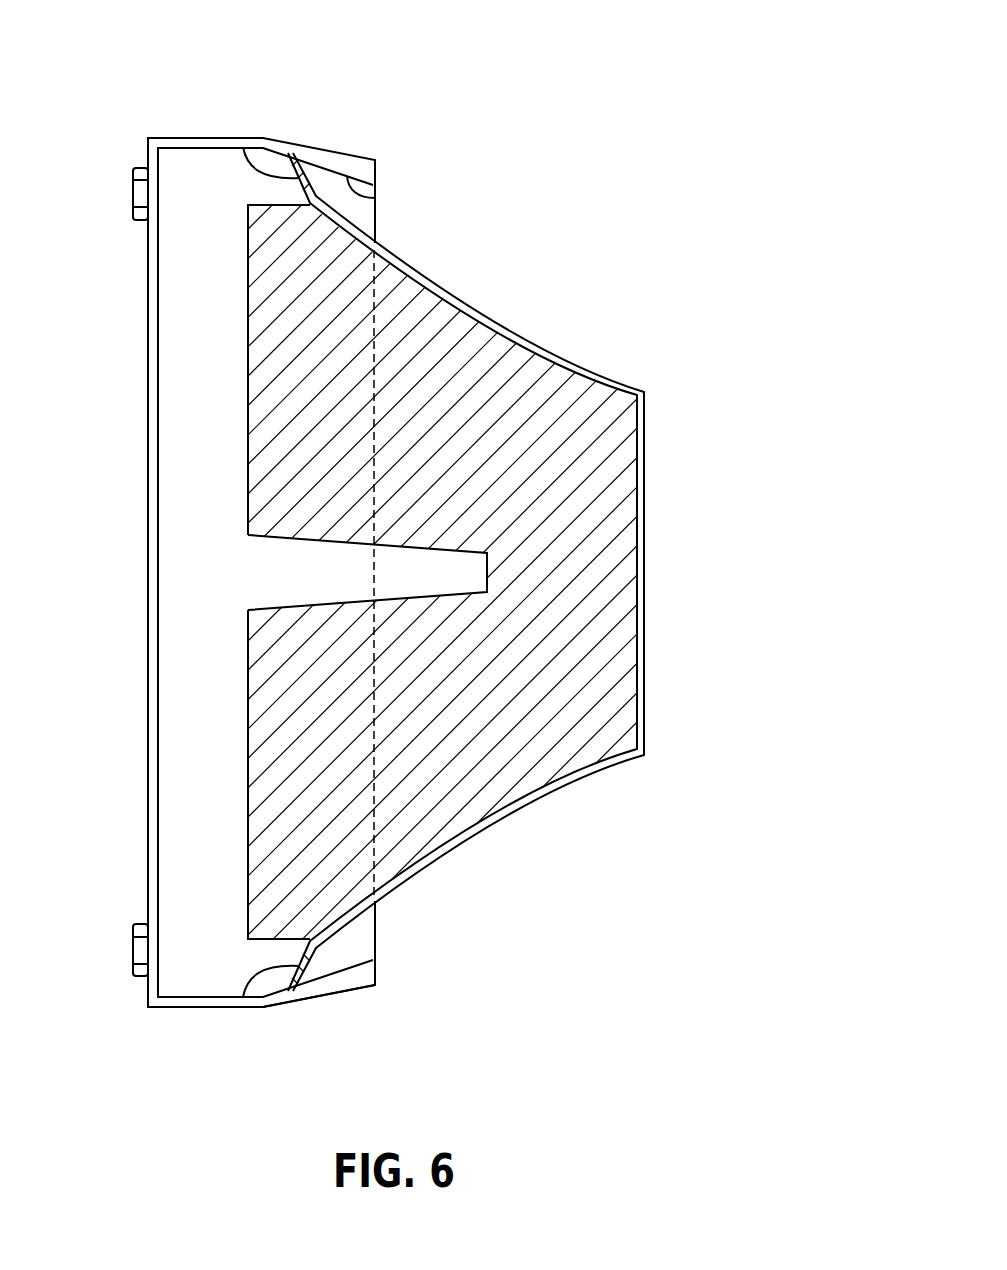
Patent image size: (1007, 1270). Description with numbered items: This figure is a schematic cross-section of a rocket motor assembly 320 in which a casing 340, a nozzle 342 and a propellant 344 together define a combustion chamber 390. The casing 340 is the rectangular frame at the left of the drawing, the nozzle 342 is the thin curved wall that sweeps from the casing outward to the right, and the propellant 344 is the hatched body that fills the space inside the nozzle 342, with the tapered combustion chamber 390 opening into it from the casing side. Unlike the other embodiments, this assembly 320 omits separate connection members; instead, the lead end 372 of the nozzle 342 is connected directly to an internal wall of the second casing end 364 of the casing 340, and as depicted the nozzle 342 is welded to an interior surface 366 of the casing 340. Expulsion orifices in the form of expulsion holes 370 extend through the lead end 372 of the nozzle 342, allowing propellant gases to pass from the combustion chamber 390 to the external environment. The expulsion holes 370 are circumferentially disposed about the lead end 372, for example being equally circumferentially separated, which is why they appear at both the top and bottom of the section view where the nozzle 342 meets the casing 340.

The rocket motor assembly 320 is at (629, 90).
The casing 340 is at (148, 704).
The nozzle 342 is at (522, 337).
The propellant 344 is at (610, 637).
The second casing end 364 is at (310, 1027).
The interior surface 366 is at (375, 198).
The expulsion holes 370 is at (243, 138).
The lead end 372 is at (344, 957).
The combustion chamber 390 is at (232, 585).